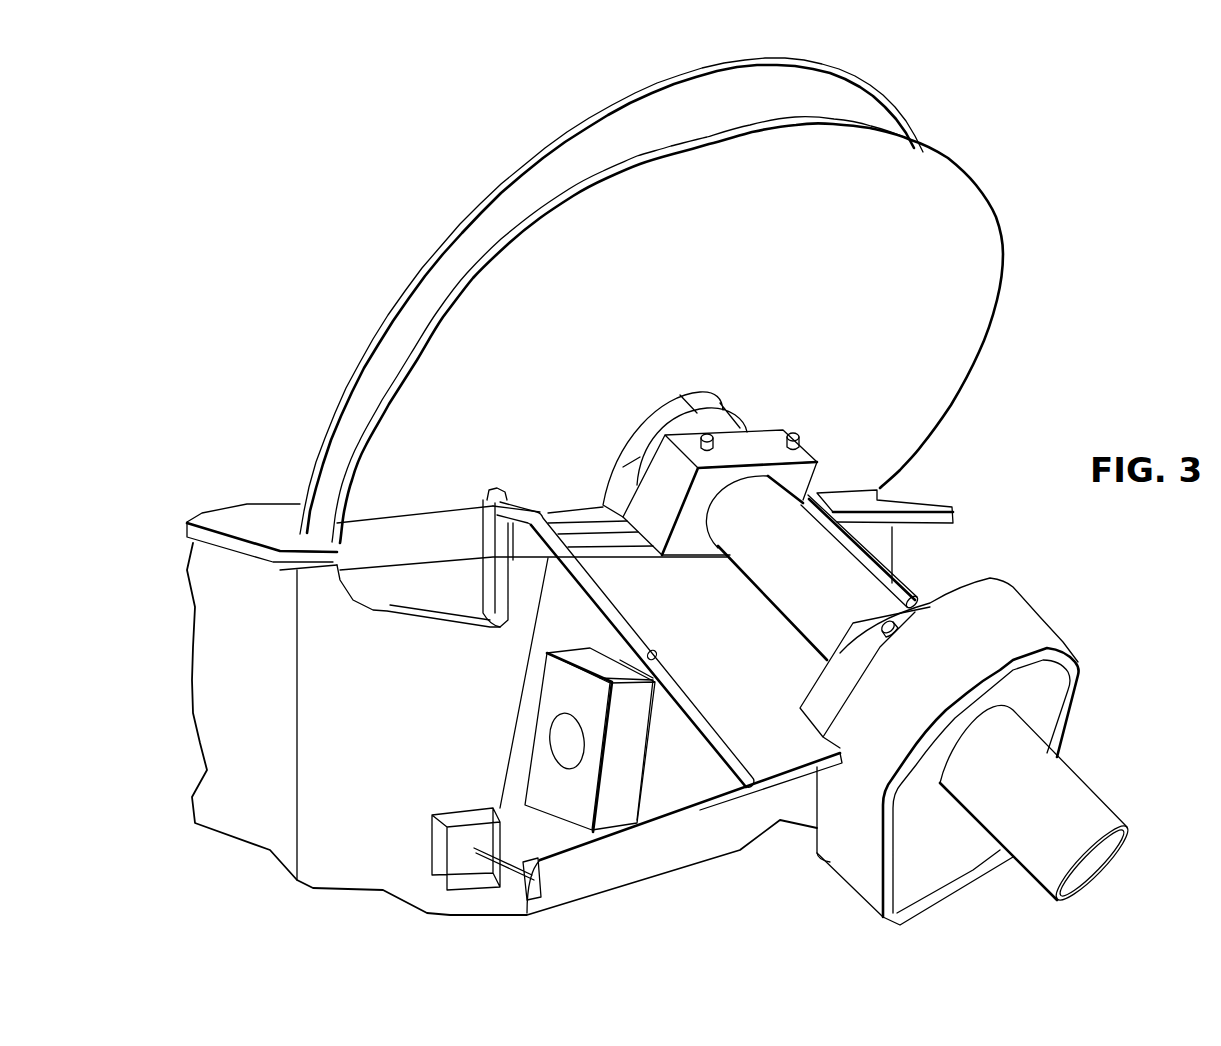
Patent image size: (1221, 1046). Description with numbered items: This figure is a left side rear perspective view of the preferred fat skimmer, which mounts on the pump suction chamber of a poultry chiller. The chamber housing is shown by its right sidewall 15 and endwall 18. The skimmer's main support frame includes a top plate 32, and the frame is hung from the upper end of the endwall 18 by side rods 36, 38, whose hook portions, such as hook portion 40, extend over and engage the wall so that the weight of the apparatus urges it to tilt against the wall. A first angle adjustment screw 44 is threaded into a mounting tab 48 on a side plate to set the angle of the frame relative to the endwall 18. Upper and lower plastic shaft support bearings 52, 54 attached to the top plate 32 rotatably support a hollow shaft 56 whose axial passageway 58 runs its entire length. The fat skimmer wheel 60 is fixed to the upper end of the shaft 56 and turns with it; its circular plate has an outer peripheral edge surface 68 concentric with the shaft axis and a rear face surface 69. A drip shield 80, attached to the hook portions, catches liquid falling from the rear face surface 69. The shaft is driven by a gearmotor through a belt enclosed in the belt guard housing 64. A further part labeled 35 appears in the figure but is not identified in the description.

The right sidewall 15 is at (213, 728).
The endwall 18 is at (390, 755).
The top plate 32 is at (772, 707).
The support bracket 35 is at (528, 691).
The side rod 36 is at (598, 587).
The side rod 38 is at (900, 578).
The hook portion 40 is at (487, 500).
The first angle adjustment screw 44 is at (507, 877).
The mounting tab 48 is at (462, 867).
The upper shaft support bearing 52 is at (810, 452).
The lower shaft support bearing 54 is at (813, 680).
The hollow shaft 56 is at (773, 579).
The axial passageway 58 is at (1103, 857).
The fat skimmer wheel 60 is at (408, 263).
The belt guard housing 64 is at (1030, 614).
The outer peripheral edge surface 68 is at (563, 133).
The rear face surface 69 is at (858, 100).
The drip shield 80 is at (736, 273).